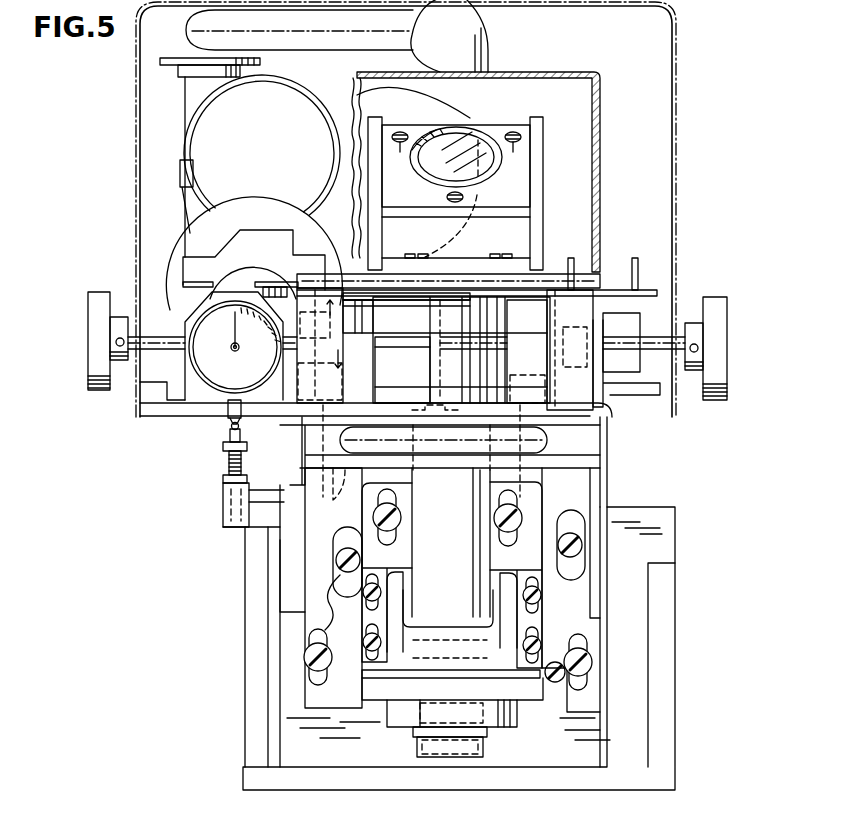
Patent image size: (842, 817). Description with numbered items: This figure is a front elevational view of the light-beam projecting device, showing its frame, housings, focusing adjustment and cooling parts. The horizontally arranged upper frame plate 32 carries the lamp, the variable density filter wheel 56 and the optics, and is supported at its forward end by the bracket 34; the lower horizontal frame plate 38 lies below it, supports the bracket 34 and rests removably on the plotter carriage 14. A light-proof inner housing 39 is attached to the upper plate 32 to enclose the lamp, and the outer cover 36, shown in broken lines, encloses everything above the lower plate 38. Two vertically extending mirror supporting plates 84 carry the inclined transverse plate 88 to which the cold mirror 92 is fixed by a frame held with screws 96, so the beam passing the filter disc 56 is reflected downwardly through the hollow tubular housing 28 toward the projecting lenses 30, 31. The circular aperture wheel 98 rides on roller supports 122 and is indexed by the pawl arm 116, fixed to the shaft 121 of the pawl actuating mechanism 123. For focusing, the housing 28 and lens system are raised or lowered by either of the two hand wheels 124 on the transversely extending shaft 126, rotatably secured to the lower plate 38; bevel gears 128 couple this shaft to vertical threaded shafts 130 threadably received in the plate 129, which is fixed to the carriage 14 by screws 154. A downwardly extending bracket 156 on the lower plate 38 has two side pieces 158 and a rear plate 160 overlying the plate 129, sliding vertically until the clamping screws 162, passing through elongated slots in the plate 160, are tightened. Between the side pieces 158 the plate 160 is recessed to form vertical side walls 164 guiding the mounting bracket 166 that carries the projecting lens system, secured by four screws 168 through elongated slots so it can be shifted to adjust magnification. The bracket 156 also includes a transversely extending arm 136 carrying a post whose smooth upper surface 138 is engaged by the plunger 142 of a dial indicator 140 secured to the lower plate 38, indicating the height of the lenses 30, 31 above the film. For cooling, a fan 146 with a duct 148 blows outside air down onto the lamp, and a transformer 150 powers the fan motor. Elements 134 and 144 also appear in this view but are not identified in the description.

The carriage 14 is at (673, 528).
The tubular housing 28 is at (448, 563).
The projecting lens 30 is at (505, 740).
The projecting lens 31 is at (470, 762).
The upper frame plate 32 is at (508, 275).
The bracket 34 is at (553, 291).
The outer cover 36 is at (139, 109).
The lower horizontal frame plate 38 is at (617, 416).
The inner housing 39 is at (600, 132).
The variable density filter wheel 56 is at (458, 114).
The mirror supporting plates 84 is at (382, 180).
The transverse plate 88 is at (497, 127).
The mirror 92 is at (437, 145).
The screws 96 is at (400, 143).
The aperture wheel 98 is at (647, 280).
The pawl arm 116 is at (395, 299).
The shaft 121 is at (370, 326).
The roller supports 122 is at (492, 312).
The pawl actuating mechanism 123 is at (358, 375).
The hand wheels 124 is at (96, 292).
The shaft 126 is at (148, 355).
The bevel gears 128 is at (563, 312).
The plate 129 is at (405, 597).
The threaded shafts 130 is at (619, 462).
The post 134 is at (278, 568).
The arm 136 is at (222, 497).
The screw surface 138 is at (230, 437).
The dial indicator 140 is at (241, 341).
The plunger 142 is at (230, 427).
The wire 144 is at (342, 600).
The cooling fan 146 is at (262, 166).
The duct 148 is at (488, 48).
The transformer 150 is at (183, 238).
The screws 154 is at (340, 563).
The bracket 156 is at (593, 625).
The side pieces 158 is at (290, 600).
The rear plate 160 is at (280, 663).
The clamping screws 162 is at (382, 538).
The vertical side walls 164 is at (362, 488).
The mounting bracket 166 is at (395, 582).
The screws 168 is at (363, 642).